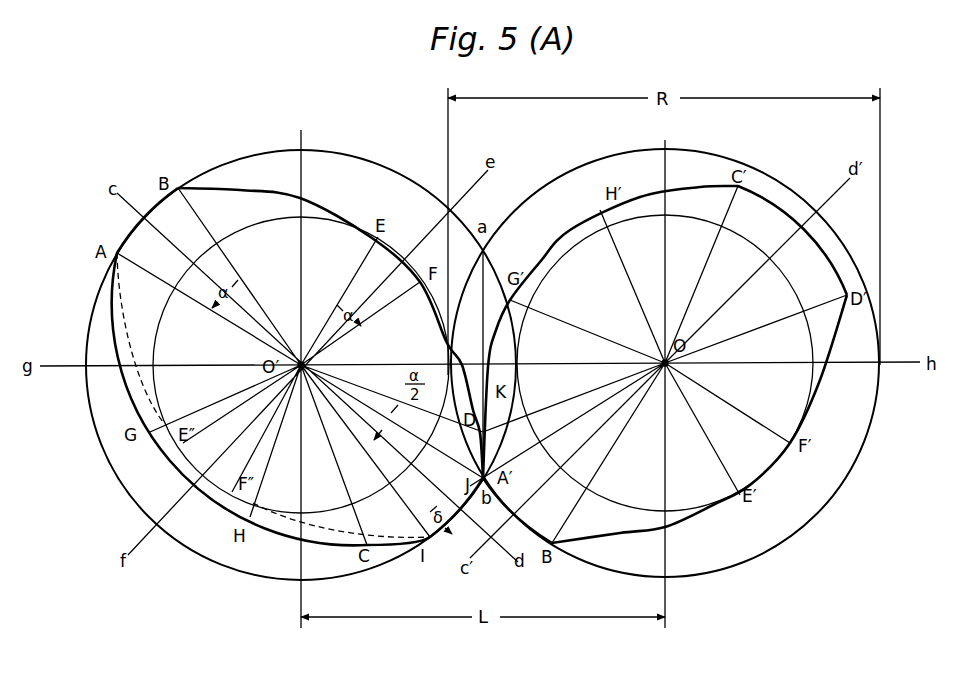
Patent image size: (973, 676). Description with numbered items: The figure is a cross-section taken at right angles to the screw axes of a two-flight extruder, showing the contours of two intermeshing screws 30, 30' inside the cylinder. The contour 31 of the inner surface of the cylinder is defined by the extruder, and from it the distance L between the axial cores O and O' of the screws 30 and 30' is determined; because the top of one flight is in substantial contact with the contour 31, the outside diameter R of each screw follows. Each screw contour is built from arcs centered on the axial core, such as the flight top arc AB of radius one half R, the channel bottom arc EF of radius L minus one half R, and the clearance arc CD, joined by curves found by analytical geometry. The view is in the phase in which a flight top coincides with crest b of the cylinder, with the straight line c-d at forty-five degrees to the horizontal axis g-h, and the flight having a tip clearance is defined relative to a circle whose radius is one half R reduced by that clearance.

The screw 30 is at (665, 331).
The screw 30' is at (297, 328).
The contour of the inner surface of the cylinder 31 is at (562, 175).